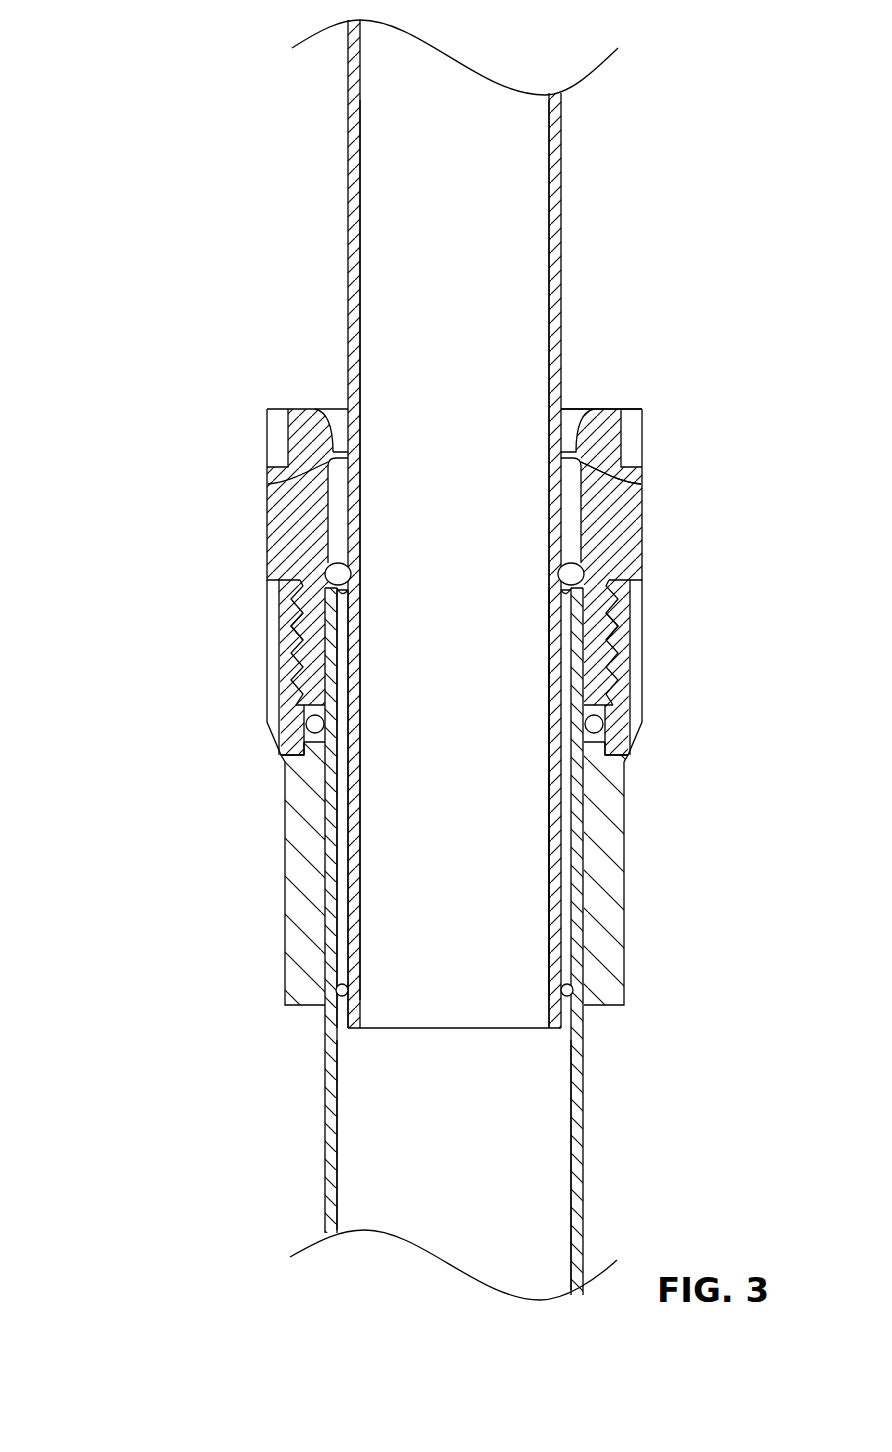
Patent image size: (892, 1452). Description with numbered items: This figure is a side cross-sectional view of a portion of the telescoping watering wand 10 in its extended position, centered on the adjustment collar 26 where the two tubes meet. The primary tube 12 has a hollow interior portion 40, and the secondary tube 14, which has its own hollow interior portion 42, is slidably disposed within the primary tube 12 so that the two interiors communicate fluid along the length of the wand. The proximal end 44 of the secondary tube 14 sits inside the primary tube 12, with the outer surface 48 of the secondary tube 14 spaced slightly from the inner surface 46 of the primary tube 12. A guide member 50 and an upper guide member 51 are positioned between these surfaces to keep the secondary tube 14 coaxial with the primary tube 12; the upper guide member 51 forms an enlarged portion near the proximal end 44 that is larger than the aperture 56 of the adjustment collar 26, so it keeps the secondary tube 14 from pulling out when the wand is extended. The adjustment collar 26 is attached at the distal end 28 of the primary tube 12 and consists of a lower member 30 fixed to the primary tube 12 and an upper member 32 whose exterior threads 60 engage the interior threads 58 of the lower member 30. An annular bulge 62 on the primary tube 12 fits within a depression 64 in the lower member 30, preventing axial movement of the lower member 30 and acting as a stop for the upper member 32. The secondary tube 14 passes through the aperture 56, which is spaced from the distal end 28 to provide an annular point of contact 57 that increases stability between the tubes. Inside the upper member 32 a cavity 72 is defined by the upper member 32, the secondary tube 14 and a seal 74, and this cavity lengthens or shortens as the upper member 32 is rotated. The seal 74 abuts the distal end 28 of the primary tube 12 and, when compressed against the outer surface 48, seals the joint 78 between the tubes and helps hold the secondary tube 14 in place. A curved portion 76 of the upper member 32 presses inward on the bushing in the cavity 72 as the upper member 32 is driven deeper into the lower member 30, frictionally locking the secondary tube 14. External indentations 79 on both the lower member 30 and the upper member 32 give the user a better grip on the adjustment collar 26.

The telescoping watering wand 10 is at (419, 660).
The primary tube 12 is at (588, 1168).
The secondary tube 14 is at (558, 150).
The adjustment collar 26 is at (493, 662).
The distal end 28 is at (322, 588).
The lower member 30 is at (282, 608).
The upper member 32 is at (275, 514).
The hollow interior portion 40 is at (461, 1157).
The hollow interior portion 42 is at (461, 254).
The proximal end 44 is at (554, 907).
The inner surface 46 is at (342, 795).
The outer surface 48 is at (349, 485).
The guide member 50 is at (348, 990).
The upper guide member 51 is at (562, 593).
The aperture 56 is at (562, 408).
The annular point of contact 57 is at (340, 423).
The interior threads 58 is at (293, 673).
The exterior threads 60 is at (290, 630).
The annular bulge 62 is at (326, 728).
The depression 64 is at (312, 737).
The cavity 72 is at (337, 447).
The seal 74 is at (352, 573).
The curved portion 76 is at (277, 483).
The joint 78 is at (560, 595).
The external indentations 79 is at (270, 437).